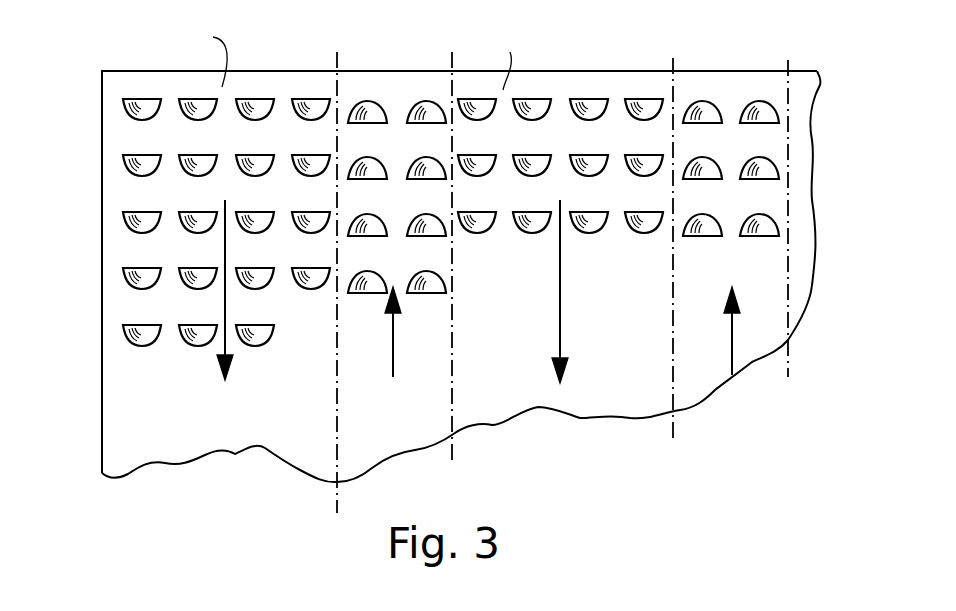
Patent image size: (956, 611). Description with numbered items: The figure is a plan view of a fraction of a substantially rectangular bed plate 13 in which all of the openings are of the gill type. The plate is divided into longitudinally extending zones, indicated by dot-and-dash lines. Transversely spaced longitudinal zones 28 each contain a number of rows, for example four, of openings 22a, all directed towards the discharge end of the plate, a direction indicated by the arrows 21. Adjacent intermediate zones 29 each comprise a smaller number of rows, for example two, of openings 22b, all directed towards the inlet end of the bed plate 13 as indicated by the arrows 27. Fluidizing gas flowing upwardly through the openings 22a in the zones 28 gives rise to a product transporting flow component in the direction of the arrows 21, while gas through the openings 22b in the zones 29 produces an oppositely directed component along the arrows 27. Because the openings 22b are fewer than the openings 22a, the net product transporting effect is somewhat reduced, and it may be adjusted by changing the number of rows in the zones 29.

The bed plate 13 is at (115, 308).
The arrows 21 is at (222, 342).
The openings 22a is at (182, 108).
The openings 22b is at (412, 100).
The arrows 27 is at (393, 356).
The longitudinal zones 28 is at (351, 52).
The intermediate zones 29 is at (368, 82).